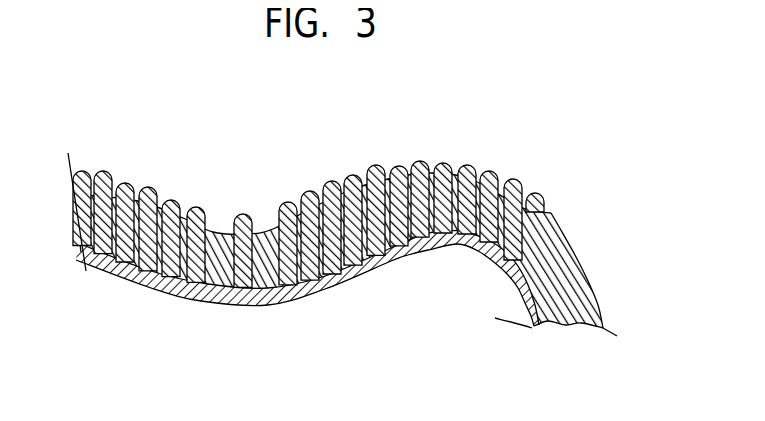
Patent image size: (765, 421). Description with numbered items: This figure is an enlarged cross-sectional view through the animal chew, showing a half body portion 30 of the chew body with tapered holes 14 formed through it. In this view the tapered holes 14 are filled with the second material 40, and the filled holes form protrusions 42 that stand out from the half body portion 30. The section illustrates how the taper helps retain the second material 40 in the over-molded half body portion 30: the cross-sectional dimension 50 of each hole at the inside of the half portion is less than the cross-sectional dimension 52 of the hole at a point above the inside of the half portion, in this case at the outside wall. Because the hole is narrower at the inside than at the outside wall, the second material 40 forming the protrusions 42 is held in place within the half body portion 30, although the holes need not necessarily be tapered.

The tapered holes 14 is at (423, 204).
The half body portion 30 is at (599, 322).
The second material 40 is at (528, 322).
The protrusions 42 is at (318, 172).
The cross-sectional dimension of the hole at the inside of the half portion 50 is at (428, 245).
The cross-sectional dimension of the hole at the outside wall 52 is at (418, 158).